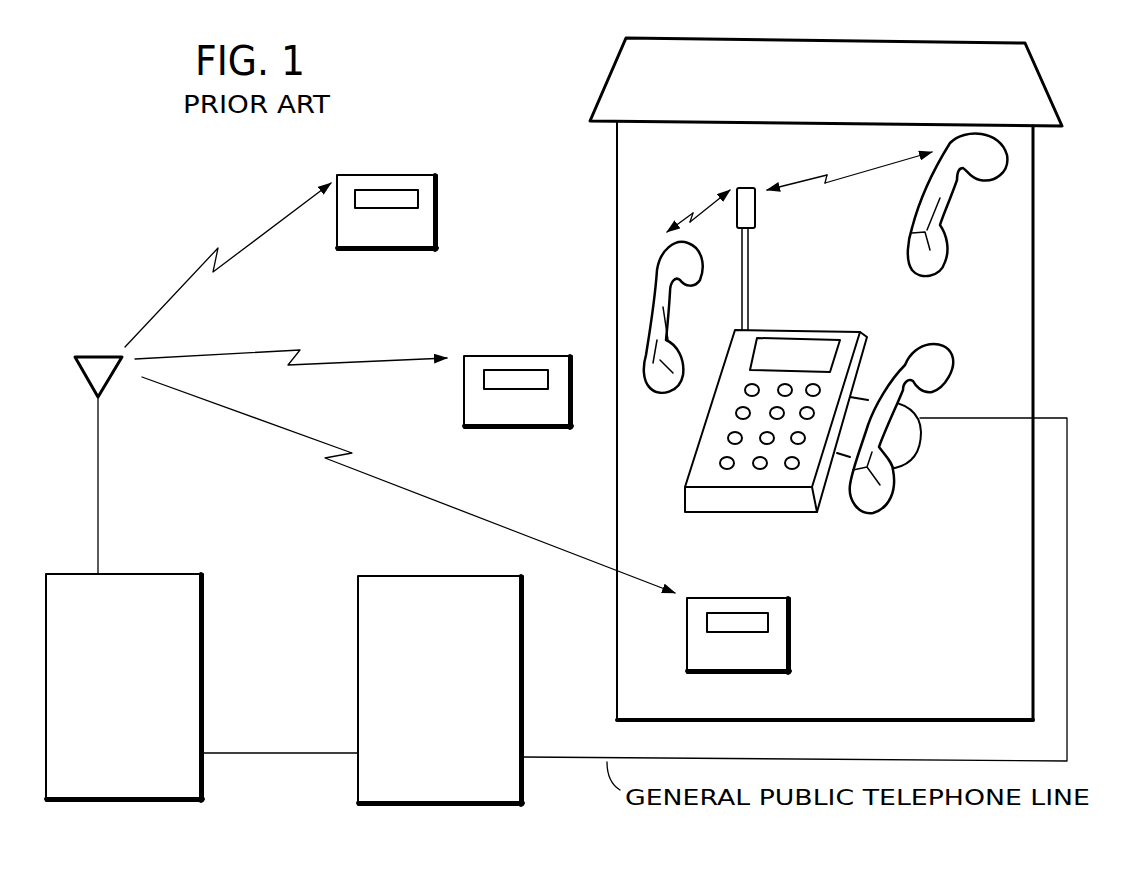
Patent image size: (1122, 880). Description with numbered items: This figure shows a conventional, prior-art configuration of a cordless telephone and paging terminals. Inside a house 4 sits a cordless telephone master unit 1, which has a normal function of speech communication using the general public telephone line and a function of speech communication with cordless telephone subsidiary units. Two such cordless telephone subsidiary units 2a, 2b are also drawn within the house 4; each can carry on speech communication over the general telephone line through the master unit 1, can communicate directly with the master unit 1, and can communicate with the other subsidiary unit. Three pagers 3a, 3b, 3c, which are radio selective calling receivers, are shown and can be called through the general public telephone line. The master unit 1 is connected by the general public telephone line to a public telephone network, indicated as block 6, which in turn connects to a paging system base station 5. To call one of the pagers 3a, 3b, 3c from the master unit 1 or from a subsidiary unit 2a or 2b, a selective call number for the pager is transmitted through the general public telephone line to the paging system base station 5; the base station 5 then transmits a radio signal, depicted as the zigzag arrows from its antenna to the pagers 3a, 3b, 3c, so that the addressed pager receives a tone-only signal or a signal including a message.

The cordless telephone master unit 1 is at (905, 507).
The cordless telephone subsidiary unit 2a is at (945, 262).
The cordless telephone subsidiary unit 2b is at (655, 395).
The pager 3a is at (437, 215).
The pager 3b is at (490, 428).
The pager 3c is at (790, 645).
The house 4 is at (1052, 80).
The paging system base station 5 is at (203, 650).
The public telephone network 6 is at (523, 677).